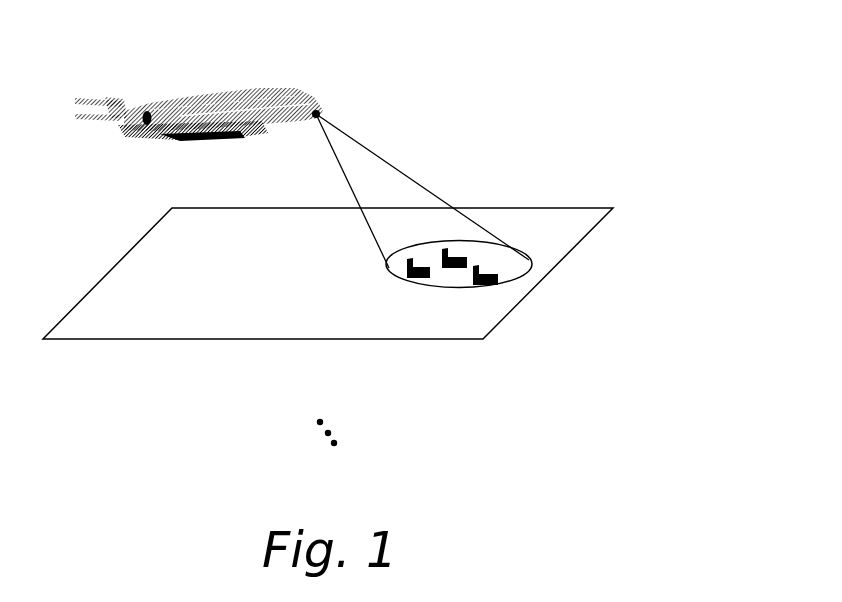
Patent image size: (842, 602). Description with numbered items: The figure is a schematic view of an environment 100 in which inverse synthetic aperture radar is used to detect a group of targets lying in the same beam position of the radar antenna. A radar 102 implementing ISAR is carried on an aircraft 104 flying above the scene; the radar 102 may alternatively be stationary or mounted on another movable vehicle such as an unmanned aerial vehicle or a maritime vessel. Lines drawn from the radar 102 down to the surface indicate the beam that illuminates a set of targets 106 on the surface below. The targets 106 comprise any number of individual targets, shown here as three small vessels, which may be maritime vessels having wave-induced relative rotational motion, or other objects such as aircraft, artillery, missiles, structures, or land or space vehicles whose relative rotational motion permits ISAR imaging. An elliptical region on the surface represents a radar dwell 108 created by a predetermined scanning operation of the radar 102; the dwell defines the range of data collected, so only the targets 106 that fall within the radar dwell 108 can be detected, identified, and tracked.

The environment / system 100 is at (607, 44).
The radar 102 is at (325, 110).
The aircraft 104 is at (188, 108).
The targets 106 is at (400, 365).
The radar dwell 108 is at (523, 278).